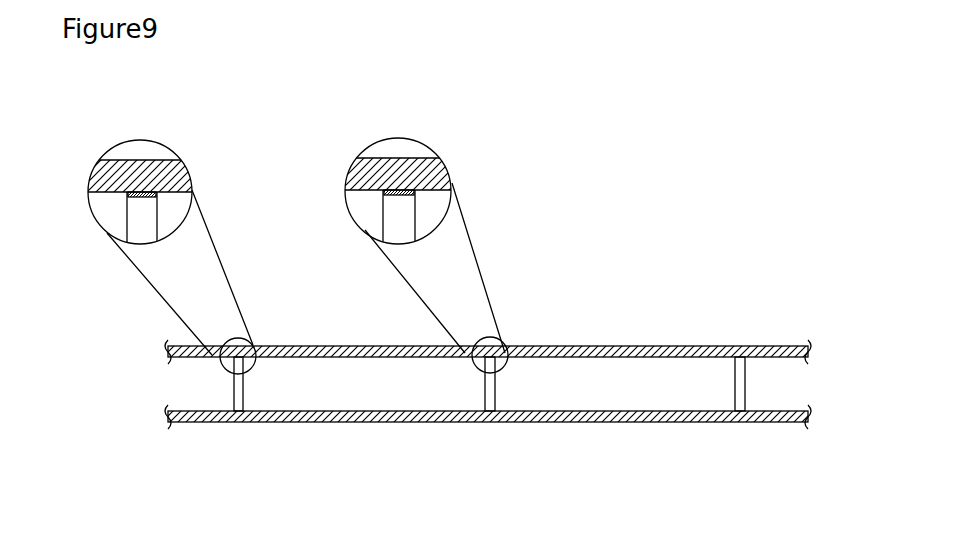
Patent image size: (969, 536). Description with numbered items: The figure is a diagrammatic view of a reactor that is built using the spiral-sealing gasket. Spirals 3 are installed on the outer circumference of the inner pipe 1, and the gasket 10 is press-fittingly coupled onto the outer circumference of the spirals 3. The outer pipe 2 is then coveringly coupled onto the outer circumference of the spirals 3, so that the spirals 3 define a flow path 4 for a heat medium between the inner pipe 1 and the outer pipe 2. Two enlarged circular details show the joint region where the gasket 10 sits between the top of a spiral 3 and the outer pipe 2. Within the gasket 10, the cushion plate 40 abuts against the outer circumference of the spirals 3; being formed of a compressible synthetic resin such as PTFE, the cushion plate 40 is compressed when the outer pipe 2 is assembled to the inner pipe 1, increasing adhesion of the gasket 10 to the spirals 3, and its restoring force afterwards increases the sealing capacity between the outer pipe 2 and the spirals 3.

The inner pipe 1 is at (638, 423).
The outer pipe 2 is at (138, 170).
The spirals 3 is at (130, 225).
The flow path 4 is at (588, 391).
The gasket 10 is at (158, 188).
The cushion plate 40 is at (135, 188).